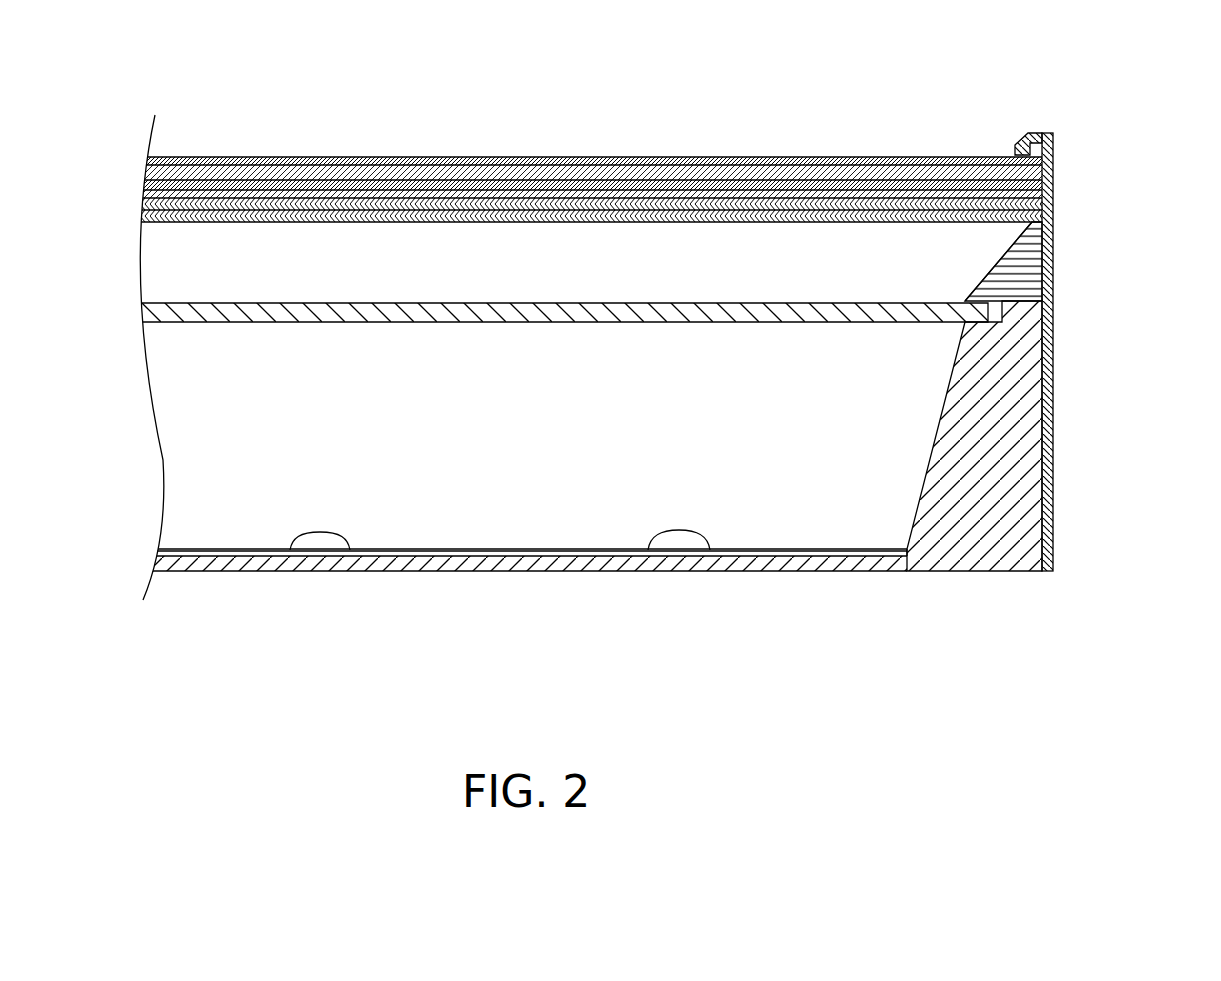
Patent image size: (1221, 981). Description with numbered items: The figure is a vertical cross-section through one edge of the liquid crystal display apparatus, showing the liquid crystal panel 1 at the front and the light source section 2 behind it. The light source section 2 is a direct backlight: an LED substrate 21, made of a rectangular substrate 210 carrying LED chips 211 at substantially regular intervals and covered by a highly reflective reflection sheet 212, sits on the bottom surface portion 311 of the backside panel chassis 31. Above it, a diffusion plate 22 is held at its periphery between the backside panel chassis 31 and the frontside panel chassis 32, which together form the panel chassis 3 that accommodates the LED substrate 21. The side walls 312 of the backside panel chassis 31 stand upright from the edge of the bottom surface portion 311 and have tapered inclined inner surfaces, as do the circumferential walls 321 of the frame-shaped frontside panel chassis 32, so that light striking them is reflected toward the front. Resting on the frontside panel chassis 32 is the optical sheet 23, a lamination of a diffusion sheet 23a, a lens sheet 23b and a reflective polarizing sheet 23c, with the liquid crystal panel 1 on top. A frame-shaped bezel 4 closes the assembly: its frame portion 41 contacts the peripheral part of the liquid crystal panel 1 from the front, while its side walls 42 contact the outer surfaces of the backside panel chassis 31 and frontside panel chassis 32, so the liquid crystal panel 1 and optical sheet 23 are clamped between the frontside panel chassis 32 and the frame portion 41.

The liquid crystal panel 1 is at (581, 194).
The light source section 2 is at (554, 486).
The panel chassis 3 is at (659, 432).
The bezel 4 is at (1056, 302).
The LED substrate 21 is at (513, 552).
The diffusion plate 22 is at (287, 323).
The optical sheet 23 is at (581, 245).
The diffusion sheet 23a is at (400, 212).
The lens sheet 23b is at (447, 206).
The reflective polarizing sheet 23c is at (362, 260).
The backside panel chassis 31 is at (636, 471).
The frontside panel chassis 32 is at (1026, 261).
The frame portion 41 is at (1027, 133).
The side walls 42 is at (1053, 185).
The substrate 210 is at (243, 557).
The LED chips 211 is at (305, 532).
The reflection sheet 212 is at (219, 549).
The bottom surface portion 311 is at (728, 565).
The side walls 312 is at (980, 520).
The circumferential walls 321 is at (1000, 270).